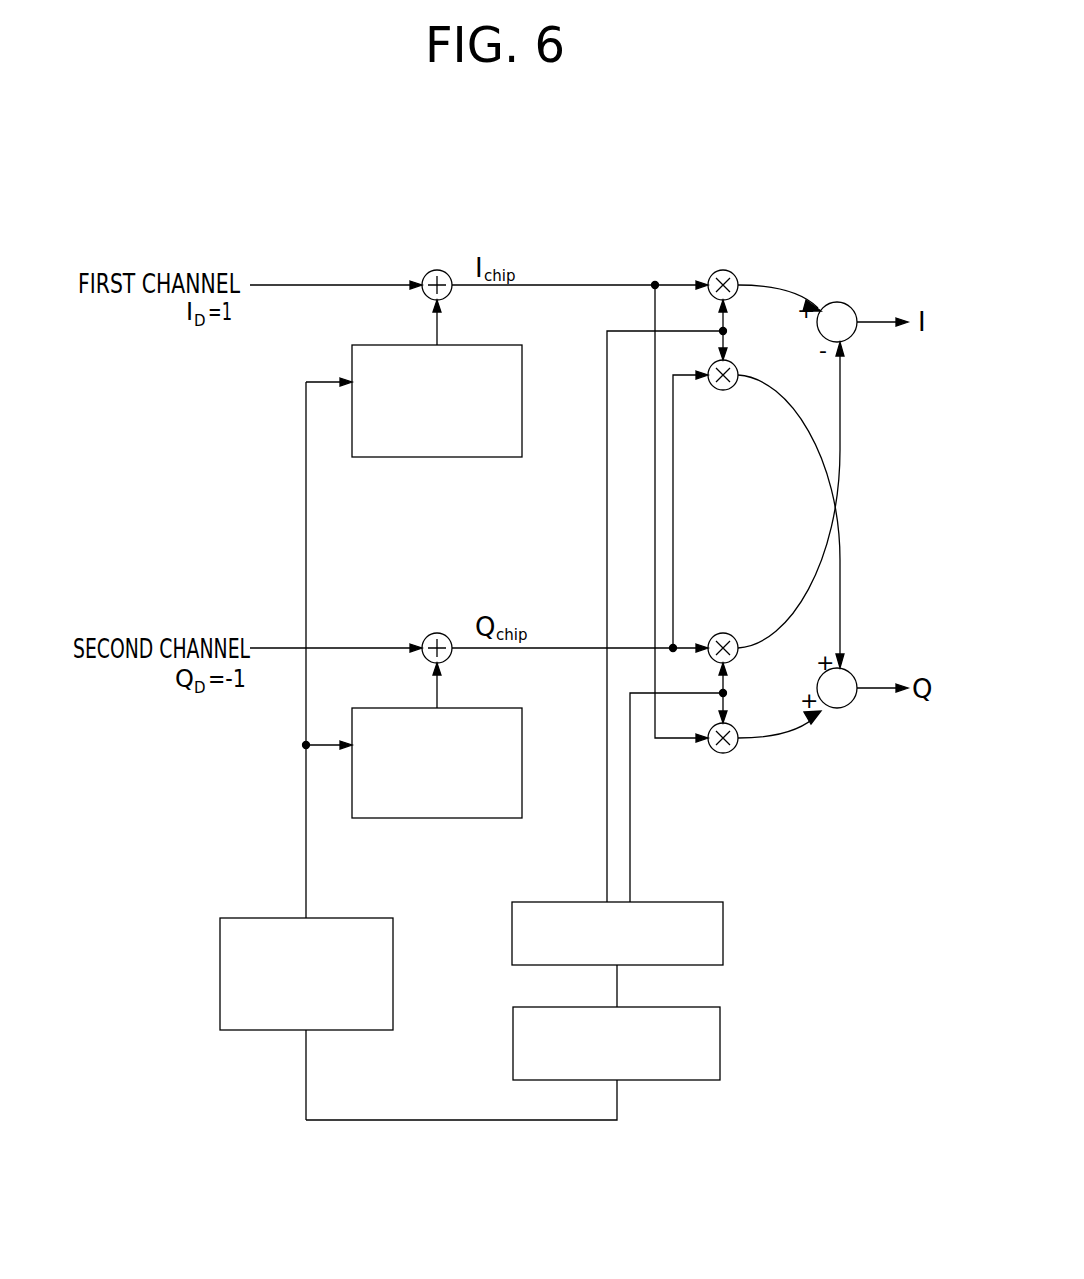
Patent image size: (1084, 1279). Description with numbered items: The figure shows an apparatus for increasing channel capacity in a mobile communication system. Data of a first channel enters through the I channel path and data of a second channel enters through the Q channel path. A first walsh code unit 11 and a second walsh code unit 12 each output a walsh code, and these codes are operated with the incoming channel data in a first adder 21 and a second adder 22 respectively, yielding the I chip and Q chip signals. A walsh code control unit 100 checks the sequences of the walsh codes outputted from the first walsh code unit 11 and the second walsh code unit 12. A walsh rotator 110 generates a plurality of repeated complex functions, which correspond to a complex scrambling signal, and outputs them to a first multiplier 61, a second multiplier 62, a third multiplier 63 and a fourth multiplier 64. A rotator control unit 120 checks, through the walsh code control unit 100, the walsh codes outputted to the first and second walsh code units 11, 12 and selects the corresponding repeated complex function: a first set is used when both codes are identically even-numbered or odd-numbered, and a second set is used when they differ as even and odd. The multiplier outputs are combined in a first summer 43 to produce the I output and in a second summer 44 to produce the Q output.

The first walsh code unit 11 is at (437, 457).
The second walsh code unit 12 is at (437, 818).
The first adder 21 is at (439, 269).
The second adder 22 is at (439, 632).
The first summer 43 is at (842, 302).
The second summer 44 is at (856, 676).
The first multiplier 61 is at (725, 269).
The second multiplier 62 is at (734, 360).
The third multiplier 63 is at (725, 632).
The fourth multiplier 64 is at (734, 723).
The walsh code control unit 100 is at (220, 955).
The walsh rotator 110 is at (723, 930).
The rotator control unit 120 is at (720, 1042).